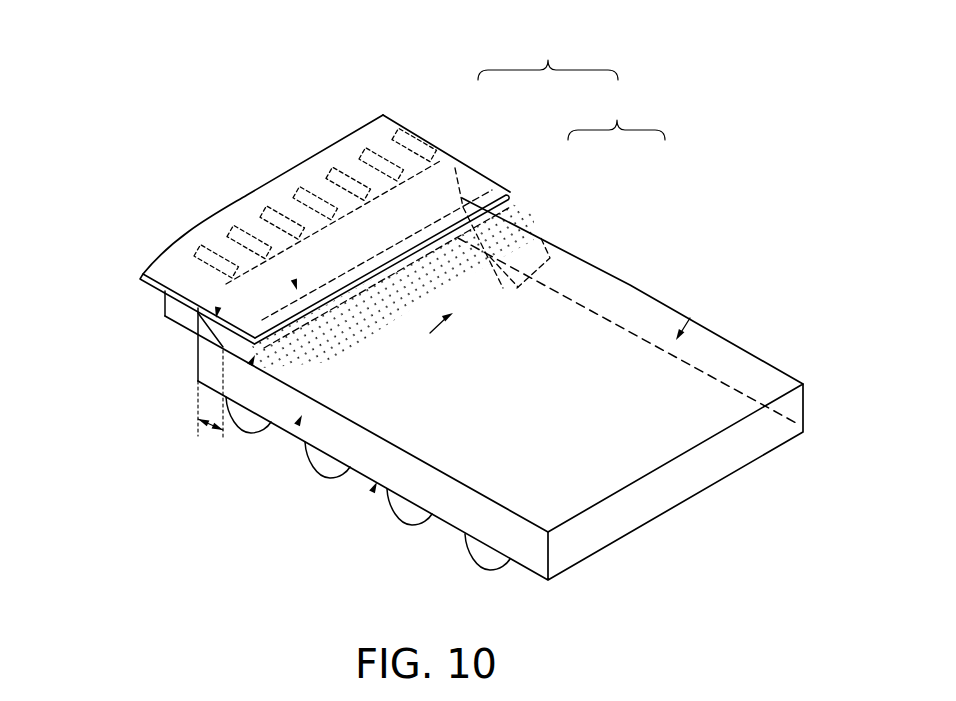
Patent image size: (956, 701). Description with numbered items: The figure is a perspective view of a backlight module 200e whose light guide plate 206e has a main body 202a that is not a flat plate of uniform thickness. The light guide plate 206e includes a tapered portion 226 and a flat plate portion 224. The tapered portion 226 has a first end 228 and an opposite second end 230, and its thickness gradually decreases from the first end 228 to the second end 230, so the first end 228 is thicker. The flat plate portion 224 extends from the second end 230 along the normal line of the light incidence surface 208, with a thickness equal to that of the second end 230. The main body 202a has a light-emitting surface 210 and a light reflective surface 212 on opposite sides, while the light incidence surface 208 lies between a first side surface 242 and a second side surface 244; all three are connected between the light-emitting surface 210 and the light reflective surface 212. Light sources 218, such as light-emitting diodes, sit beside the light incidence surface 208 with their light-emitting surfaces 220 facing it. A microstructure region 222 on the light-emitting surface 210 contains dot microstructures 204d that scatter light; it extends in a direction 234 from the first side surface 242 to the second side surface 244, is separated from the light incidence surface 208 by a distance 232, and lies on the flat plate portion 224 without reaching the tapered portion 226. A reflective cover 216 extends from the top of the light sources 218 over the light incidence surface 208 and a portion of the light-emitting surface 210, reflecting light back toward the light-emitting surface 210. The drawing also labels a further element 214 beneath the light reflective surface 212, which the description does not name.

The backlight module 200e is at (195, 150).
The light incidence surface 208 is at (262, 236).
The cover 216 is at (462, 196).
The first end 228 is at (402, 206).
The light guide plate 206e is at (548, 53).
The dot microstructures 204d is at (533, 235).
The main body 202a is at (616, 115).
The tapered portion 226 is at (542, 277).
The flat plate portion 224 is at (652, 330).
The second side surface 244 is at (695, 318).
The light-emitting surface 210 is at (700, 367).
The direction 234 is at (436, 323).
The solder ball 214 is at (498, 582).
The light reflective surface 212 is at (372, 490).
The first side surface 242 is at (297, 424).
The microstructure region 222 is at (251, 364).
The distance 232 is at (203, 426).
The second end 230 is at (199, 380).
The light-emitting surfaces 220 is at (196, 356).
The light sources 218 is at (158, 300).